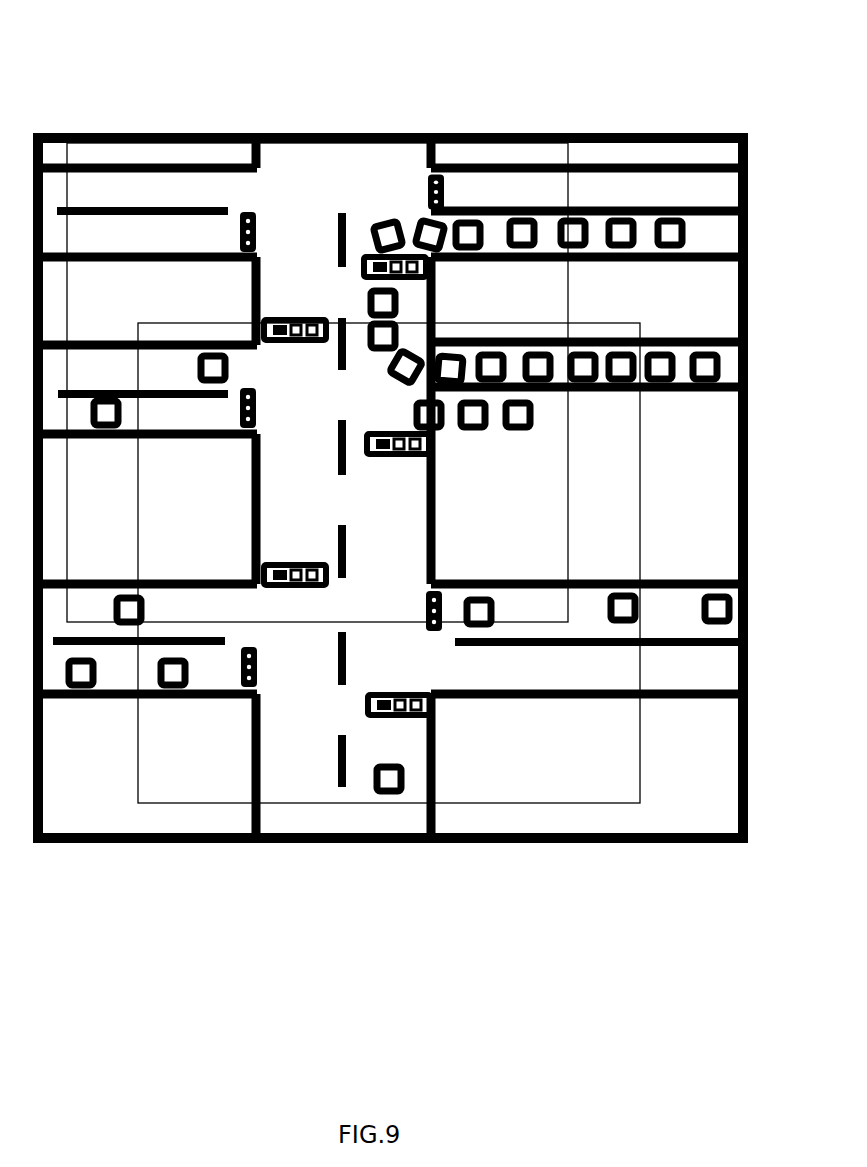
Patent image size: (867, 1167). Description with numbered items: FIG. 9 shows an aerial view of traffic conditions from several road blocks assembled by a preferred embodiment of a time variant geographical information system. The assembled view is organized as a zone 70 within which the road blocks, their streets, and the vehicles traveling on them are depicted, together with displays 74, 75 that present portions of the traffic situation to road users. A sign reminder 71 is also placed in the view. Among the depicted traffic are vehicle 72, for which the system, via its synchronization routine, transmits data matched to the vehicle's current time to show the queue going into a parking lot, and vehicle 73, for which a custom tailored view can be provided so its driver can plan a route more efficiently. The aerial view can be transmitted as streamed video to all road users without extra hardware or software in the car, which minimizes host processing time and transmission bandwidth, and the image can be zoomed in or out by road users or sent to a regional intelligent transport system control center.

The zone 70 is at (53, 133).
The sign reminder 71 is at (407, 717).
The vehicle 72 is at (553, 360).
The vehicle 73 is at (383, 797).
The display 74 is at (383, 153).
The display 75 is at (170, 803).